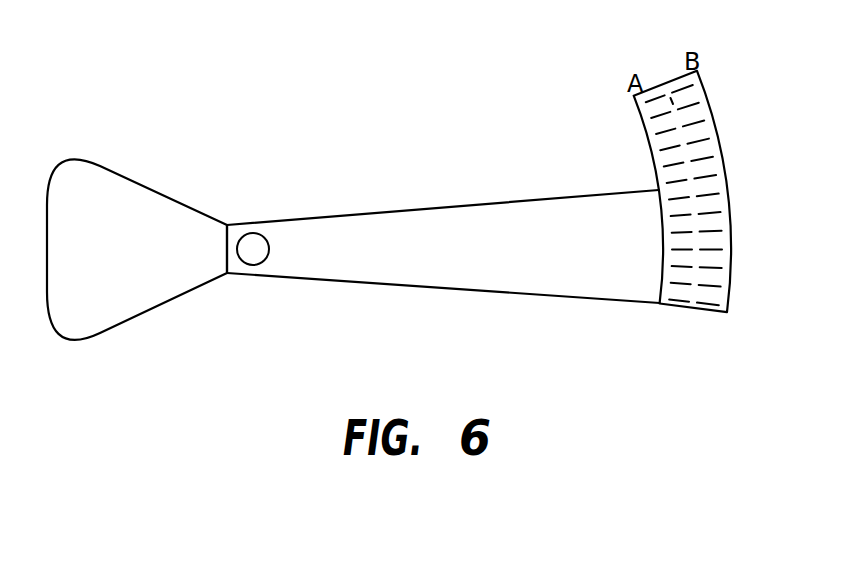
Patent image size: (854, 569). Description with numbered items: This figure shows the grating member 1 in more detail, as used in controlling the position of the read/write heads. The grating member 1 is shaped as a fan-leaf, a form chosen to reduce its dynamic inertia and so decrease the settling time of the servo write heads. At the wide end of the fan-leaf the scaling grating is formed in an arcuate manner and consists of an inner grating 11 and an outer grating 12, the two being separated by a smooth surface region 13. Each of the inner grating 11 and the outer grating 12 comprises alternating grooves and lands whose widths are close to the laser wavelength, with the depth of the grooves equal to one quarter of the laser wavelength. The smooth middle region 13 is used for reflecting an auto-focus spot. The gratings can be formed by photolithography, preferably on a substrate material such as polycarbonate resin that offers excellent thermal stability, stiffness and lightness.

The grating member 1 is at (405, 247).
The inner grating 11 is at (655, 100).
The outer grating 12 is at (690, 103).
The smooth surface region 13 is at (672, 98).